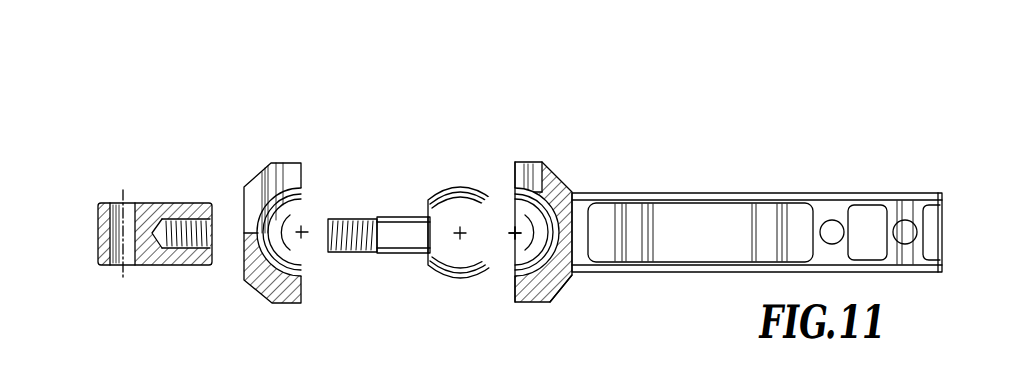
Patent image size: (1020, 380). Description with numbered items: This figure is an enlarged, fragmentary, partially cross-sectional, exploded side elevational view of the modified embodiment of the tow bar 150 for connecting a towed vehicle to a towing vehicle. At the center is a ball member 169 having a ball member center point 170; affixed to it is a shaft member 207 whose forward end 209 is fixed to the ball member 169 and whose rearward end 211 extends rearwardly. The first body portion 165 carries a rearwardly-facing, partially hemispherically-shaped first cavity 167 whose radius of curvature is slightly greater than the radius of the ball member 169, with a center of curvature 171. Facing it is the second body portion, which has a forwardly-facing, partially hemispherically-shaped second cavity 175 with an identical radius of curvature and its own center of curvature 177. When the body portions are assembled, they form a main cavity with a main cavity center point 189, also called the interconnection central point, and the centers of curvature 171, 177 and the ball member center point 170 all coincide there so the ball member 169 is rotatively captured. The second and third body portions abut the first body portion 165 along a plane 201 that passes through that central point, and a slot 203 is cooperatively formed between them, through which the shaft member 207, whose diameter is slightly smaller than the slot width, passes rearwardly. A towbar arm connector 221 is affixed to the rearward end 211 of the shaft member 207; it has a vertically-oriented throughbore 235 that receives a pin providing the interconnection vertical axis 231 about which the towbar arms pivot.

The modified embodiment of the tow bar 150 is at (366, 196).
The first body portion 165 is at (553, 183).
The first cavity 167 is at (535, 253).
The ball member 169 is at (431, 186).
The ball member center point 170 is at (417, 180).
The center of curvature 171 is at (510, 243).
The second cavity 175 is at (302, 265).
The center of curvature 177 is at (293, 222).
The main cavity center point 189 is at (512, 240).
The plane 201 is at (706, 236).
The slot 203 is at (290, 172).
The shaft member 207 is at (386, 253).
The forward end 209 is at (427, 216).
The rearward end 211 is at (340, 253).
The towbar arm connector 221 is at (142, 192).
The interconnection vertical axis 231 is at (123, 200).
The vertically-oriented throughbore 235 is at (132, 212).